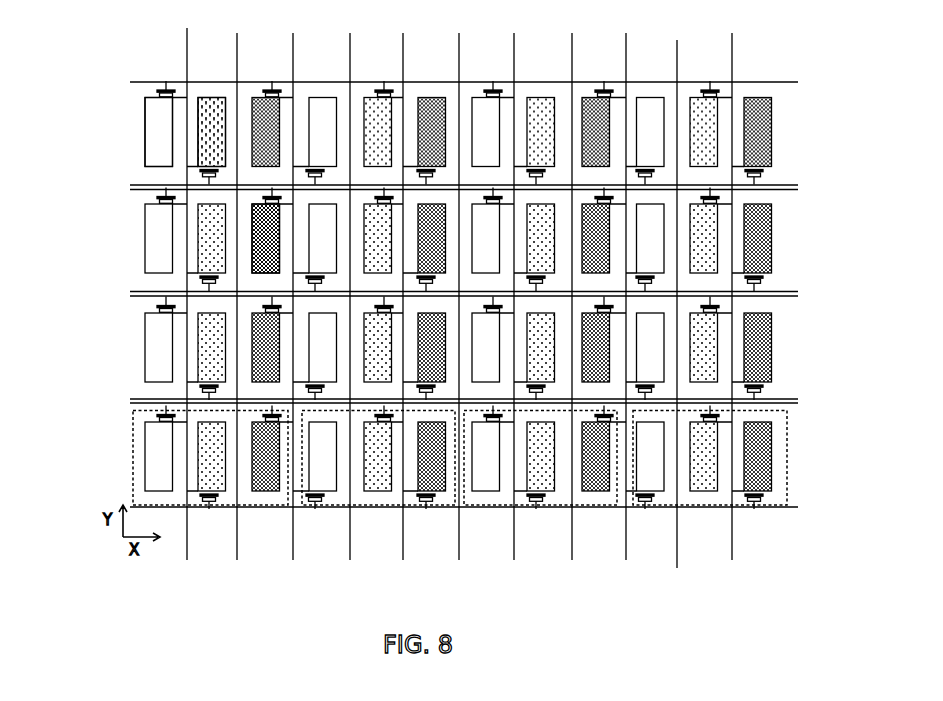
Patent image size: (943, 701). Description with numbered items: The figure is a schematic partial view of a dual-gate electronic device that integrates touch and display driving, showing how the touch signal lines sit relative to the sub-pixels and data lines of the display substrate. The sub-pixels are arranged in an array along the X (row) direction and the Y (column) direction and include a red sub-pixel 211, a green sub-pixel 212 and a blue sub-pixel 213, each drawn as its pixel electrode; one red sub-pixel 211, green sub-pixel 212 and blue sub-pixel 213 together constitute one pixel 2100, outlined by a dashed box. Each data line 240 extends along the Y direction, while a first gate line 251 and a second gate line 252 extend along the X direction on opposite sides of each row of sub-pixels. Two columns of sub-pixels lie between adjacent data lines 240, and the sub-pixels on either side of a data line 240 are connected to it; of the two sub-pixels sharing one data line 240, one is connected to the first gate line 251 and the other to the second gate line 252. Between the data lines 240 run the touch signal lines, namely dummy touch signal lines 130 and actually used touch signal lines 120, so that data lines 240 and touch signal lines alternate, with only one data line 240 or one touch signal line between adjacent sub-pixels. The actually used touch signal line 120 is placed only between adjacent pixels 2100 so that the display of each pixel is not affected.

The data line 240 is at (187, 73).
The green sub-pixel 212 is at (212, 116).
The red sub-pixel 211 is at (163, 140).
The first gate line 251 is at (145, 190).
The blue sub-pixel 213 is at (262, 243).
The second gate line 252 is at (145, 292).
The pixel 2100 is at (133, 446).
The dummy touch signal line 130 is at (237, 535).
The actually used touch signal line 120 is at (459, 532).